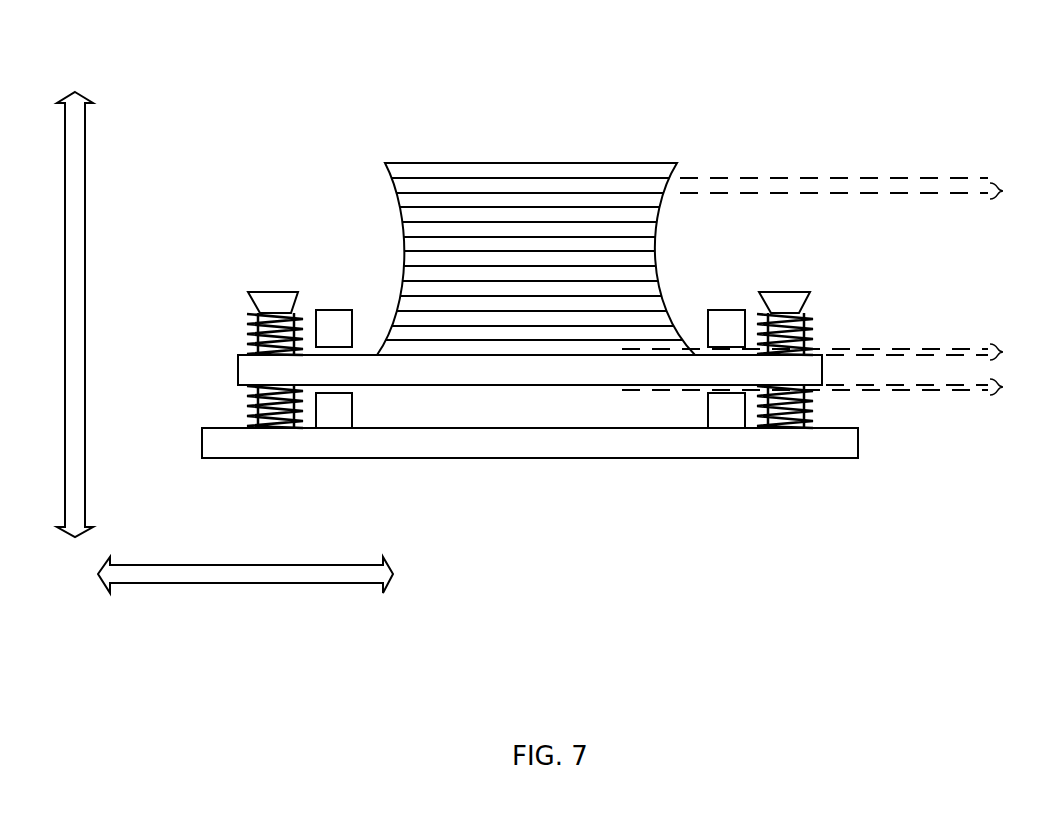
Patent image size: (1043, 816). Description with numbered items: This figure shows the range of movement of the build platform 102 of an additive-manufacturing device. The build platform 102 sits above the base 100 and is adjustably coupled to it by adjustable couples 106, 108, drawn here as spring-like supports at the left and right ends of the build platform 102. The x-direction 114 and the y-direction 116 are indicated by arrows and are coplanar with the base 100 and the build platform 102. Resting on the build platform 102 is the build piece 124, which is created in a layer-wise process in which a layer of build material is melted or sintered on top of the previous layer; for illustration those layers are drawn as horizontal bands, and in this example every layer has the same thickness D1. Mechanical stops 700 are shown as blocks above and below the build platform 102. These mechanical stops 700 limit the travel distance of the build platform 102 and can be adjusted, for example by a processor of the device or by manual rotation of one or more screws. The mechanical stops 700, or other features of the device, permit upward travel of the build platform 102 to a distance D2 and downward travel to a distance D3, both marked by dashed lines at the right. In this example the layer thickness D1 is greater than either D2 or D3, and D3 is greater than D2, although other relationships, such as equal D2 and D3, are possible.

The base 100 is at (530, 443).
The build platform 102 is at (530, 370).
The adjustable couple 106 is at (276, 292).
The adjustable couple 108 is at (786, 292).
The x-direction 114 is at (394, 574).
The y-direction 116 is at (77, 91).
The build piece 124 is at (537, 163).
The mechanical stops 700 is at (334, 310).
The layer thickness D1 is at (860, 191).
The upward travel distance D2 is at (831, 353).
The downward travel distance D3 is at (831, 389).